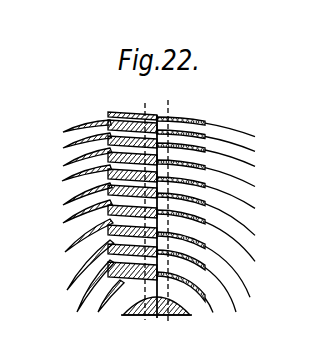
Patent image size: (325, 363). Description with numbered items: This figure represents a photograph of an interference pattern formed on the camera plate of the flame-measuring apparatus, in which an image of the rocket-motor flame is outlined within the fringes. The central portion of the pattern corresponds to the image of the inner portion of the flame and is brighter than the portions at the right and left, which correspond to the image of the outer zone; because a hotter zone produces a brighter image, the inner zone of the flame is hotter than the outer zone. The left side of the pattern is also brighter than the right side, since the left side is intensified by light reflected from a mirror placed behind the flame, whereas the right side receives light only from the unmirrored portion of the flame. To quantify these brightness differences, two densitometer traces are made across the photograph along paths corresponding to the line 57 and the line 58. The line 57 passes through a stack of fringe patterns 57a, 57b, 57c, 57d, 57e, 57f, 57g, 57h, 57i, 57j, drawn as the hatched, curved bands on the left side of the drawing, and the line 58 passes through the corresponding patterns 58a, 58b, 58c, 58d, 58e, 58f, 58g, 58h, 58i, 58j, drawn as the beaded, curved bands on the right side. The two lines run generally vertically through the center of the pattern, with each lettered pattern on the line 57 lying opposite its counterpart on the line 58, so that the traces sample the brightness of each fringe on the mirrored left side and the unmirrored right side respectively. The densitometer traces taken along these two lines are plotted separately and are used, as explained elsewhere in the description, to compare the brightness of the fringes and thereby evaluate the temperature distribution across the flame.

The line 57 is at (144, 107).
The line 58 is at (170, 103).
The pattern 57a is at (77, 297).
The pattern 58a is at (205, 298).
The pattern 57b is at (77, 268).
The pattern 58b is at (206, 268).
The pattern 57c is at (77, 242).
The pattern 58c is at (206, 246).
The pattern 57d is at (72, 213).
The pattern 58d is at (206, 222).
The pattern 57e is at (72, 193).
The pattern 58e is at (206, 204).
The pattern 57f is at (70, 176).
The pattern 58f is at (206, 186).
The pattern 57g is at (70, 160).
The pattern 58g is at (206, 168).
The pattern 57h is at (70, 143).
The pattern 58h is at (206, 150).
The pattern 57i is at (107, 113).
The pattern 58i is at (206, 136).
The pattern 57j is at (108, 115).
The pattern 58j is at (206, 123).